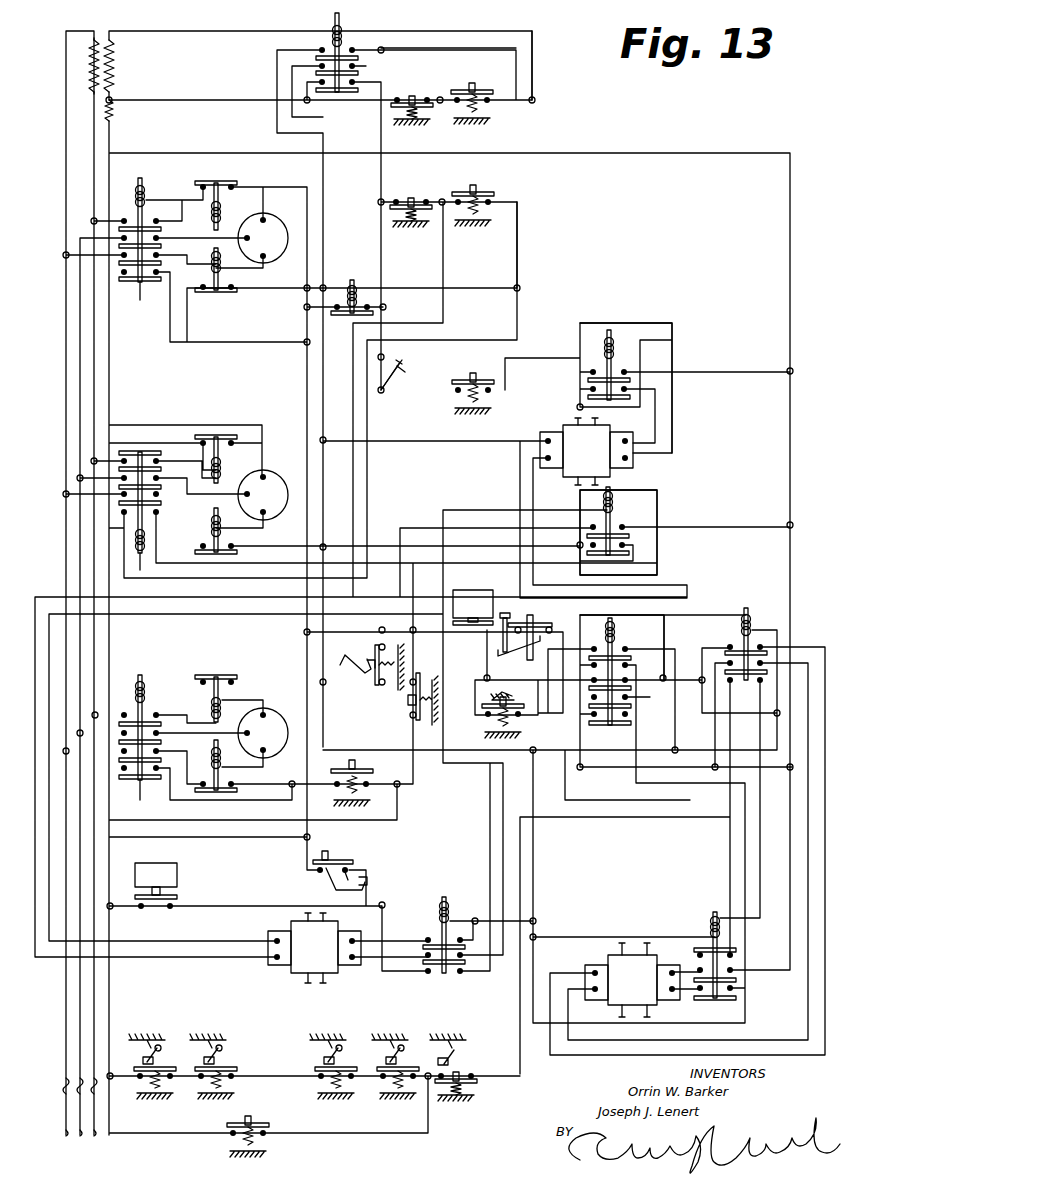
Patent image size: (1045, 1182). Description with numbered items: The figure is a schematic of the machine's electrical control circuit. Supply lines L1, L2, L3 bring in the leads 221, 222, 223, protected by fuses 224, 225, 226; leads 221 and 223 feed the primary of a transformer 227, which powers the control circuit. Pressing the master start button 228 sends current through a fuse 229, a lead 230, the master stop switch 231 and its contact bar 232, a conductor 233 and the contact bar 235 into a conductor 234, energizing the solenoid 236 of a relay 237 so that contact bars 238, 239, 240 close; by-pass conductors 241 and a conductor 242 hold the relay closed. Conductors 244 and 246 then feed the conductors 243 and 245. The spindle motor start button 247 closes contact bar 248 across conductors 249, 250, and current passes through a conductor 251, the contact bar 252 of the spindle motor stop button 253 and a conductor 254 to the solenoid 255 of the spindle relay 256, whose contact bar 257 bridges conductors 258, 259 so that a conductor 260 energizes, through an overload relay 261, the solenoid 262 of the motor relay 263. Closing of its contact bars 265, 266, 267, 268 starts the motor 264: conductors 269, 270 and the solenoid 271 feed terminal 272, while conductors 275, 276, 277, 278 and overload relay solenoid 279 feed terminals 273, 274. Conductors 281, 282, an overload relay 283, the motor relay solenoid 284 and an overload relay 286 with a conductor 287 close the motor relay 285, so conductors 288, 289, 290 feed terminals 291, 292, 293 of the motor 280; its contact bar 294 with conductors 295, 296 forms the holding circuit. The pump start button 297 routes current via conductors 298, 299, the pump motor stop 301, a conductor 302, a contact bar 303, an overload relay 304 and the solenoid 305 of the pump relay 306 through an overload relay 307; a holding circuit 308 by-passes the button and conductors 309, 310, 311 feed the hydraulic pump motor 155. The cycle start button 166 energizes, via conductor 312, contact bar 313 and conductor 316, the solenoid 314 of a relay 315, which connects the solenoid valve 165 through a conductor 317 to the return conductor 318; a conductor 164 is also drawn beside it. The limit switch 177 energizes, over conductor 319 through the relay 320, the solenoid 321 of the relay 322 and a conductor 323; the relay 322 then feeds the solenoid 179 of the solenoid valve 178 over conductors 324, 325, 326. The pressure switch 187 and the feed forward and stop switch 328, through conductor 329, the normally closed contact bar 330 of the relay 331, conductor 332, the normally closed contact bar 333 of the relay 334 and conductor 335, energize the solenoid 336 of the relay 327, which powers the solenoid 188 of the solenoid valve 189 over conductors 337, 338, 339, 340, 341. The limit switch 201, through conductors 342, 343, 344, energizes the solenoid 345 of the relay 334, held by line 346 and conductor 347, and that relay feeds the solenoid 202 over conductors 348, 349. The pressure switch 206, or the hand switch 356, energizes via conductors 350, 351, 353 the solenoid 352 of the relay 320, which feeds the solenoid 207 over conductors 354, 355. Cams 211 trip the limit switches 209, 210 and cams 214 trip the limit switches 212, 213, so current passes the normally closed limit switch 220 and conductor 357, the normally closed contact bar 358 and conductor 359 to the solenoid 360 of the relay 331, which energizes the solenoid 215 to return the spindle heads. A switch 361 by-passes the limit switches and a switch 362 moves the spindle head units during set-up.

The hydraulic pump motor 155 is at (276, 720).
The conductor 164 is at (633, 426).
The solenoid valve 165 is at (549, 421).
The cycle start button 166 is at (482, 373).
The limit switch 177 is at (366, 702).
The solenoid valve 178 is at (291, 932).
The solenoid 179 is at (277, 962).
The pressure switch 187 is at (462, 590).
The solenoid 188 is at (582, 997).
The solenoid valve 189 is at (601, 952).
The limit switch 201 is at (546, 666).
The solenoid 202 is at (536, 434).
The pressure switch 206 is at (178, 866).
The solenoid 207 is at (342, 932).
The limit switch 209 is at (408, 1034).
The limit switch 210 is at (336, 1032).
The cams 211 is at (393, 1056).
The limit switch 212 is at (234, 1026).
The limit switch 213 is at (144, 1027).
The cams 214 is at (206, 1056).
The solenoid 215 is at (668, 997).
The limit switch 220 is at (460, 1035).
The lead 221 is at (66, 1124).
The lead 222 is at (80, 1128).
The lead 223 is at (92, 1140).
The fuse 224 is at (84, 1090).
The fuse 225 is at (98, 1084).
The fuse 226 is at (98, 1071).
The transformer 227 is at (110, 44).
The master start button 228 is at (486, 87).
The fuse 229 is at (124, 74).
The lead 230 is at (164, 99).
The master stop switch 231 is at (416, 98).
The contact bar 232 is at (412, 94).
The conductor 233 is at (442, 106).
The conductor 234 is at (506, 131).
The contact bar 235 is at (464, 86).
The solenoid 236 is at (345, 32).
The relay 237 is at (322, 20).
The contact bar 238 is at (355, 52).
The contact bar 239 is at (360, 73).
The contact bar 240 is at (346, 96).
The by-pass conductors 241 is at (402, 138).
The conductor 242 is at (427, 52).
The conductor 243 is at (382, 630).
The conductor 244 is at (382, 62).
The conductor 245 is at (386, 168).
The conductor 246 is at (292, 86).
The spindle motor start button 247 is at (487, 179).
The contact bar 248 is at (486, 188).
The conductor 249 is at (445, 172).
The conductor 250 is at (518, 206).
The conductor 251 is at (396, 190).
The contact bar 252 is at (394, 216).
The spindle motor stop button 253 is at (402, 204).
The conductor 254 is at (466, 286).
The solenoid 255 is at (355, 288).
The spindle relay 256 is at (352, 267).
The contact bar 257 is at (306, 313).
The conductor 258 is at (378, 304).
The conductor 259 is at (306, 306).
The conductor 260 is at (307, 656).
The overload relay 261 is at (218, 182).
The solenoid 262 is at (146, 190).
The motor relay 263 is at (120, 185).
The motor 264 is at (297, 221).
The contact bar 265 is at (128, 221).
The contact bar 266 is at (172, 220).
The contact bar 267 is at (149, 286).
The contact bar 268 is at (127, 313).
The conductor 269 is at (90, 220).
The conductor 270 is at (196, 202).
The solenoid 271 is at (220, 210).
The terminal 272 is at (264, 214).
The motor terminal 273 is at (168, 256).
The motor terminal 274 is at (220, 258).
The conductor 275 is at (70, 236).
The conductor 276 is at (174, 244).
The conductor 277 is at (66, 262).
The conductor 278 is at (158, 265).
The overload relay solenoid 279 is at (218, 270).
The motor 280 is at (229, 503).
The conductor 281 is at (186, 338).
The conductor 282 is at (112, 348).
The overload relay 283 is at (213, 424).
The motor relay solenoid 284 is at (146, 542).
The motor relay 285 is at (137, 563).
The overload relay 286 is at (229, 542).
The conductor 287 is at (252, 560).
The conductor 288 is at (84, 456).
The conductor 289 is at (76, 476).
The conductor 290 is at (64, 492).
The terminal 291 is at (264, 476).
The terminal 292 is at (263, 495).
The terminal 293 is at (266, 512).
The contact bar 294 is at (114, 503).
The conductor 295 is at (235, 578).
The conductor 296 is at (130, 594).
The pump start button 297 is at (351, 760).
The conductor 298 is at (388, 625).
The conductor 299 is at (414, 648).
The pump motor stop 301 is at (434, 665).
The conductor 302 is at (409, 786).
The contact bar 303 is at (351, 772).
The overload relay 304 is at (242, 782).
The solenoid 305 is at (134, 672).
The pump relay 306 is at (148, 671).
The overload relay 307 is at (213, 666).
The by-pass holding circuit 308 is at (403, 824).
The conductor 309 is at (183, 716).
The conductor 310 is at (180, 726).
The conductor 311 is at (180, 746).
The conductor 312 is at (385, 454).
The contact bar 313 is at (450, 380).
The solenoid 314 is at (614, 344).
The relay 315 is at (608, 322).
The conductor 316 is at (405, 434).
The conductor 317 is at (638, 322).
The conductor 318 is at (790, 856).
The conductor 319 is at (490, 853).
The relay 320 is at (456, 910).
The solenoid 321 is at (601, 496).
The relay 322 is at (634, 490).
The conductor 323 is at (330, 542).
The conductor 324 is at (207, 918).
The conductor 325 is at (153, 968).
The conductor 326 is at (727, 524).
The relay 327 is at (773, 617).
The feed forward and stop switch 328 is at (540, 604).
The conductor 329 is at (677, 892).
The contact bar 330 is at (733, 948).
The relay 331 is at (736, 880).
The conductor 332 is at (674, 788).
The contact bar 333 is at (615, 644).
The relay 334 is at (612, 628).
The conductor 335 is at (590, 616).
The solenoid 336 is at (748, 606).
The conductor 337 is at (706, 644).
The conductor 338 is at (657, 1044).
The conductor 339 is at (806, 1002).
The conductor 340 is at (713, 722).
The conductor 341 is at (678, 764).
The conductor 342 is at (493, 630).
The conductor 343 is at (475, 654).
The conductor 344 is at (556, 700).
The solenoid 345 is at (593, 620).
The line 346 is at (654, 614).
The conductor 347 is at (664, 682).
The conductor 348 is at (538, 738).
The conductor 349 is at (666, 582).
The conductor 350 is at (327, 1148).
The conductor 351 is at (546, 890).
The solenoid 352 is at (453, 872).
The conductor 353 is at (728, 1026).
The conductor 354 is at (464, 940).
The conductor 355 is at (484, 960).
The hand operated switch 356 is at (332, 850).
The conductor 357 is at (522, 1062).
The contact bar 358 is at (746, 680).
The conductor 359 is at (646, 936).
The solenoid 360 is at (720, 918).
The switch 361 is at (218, 1147).
The switch 362 is at (413, 370).
The power line L1 is at (66, 986).
The power line L2 is at (80, 1007).
The power line L3 is at (94, 1032).